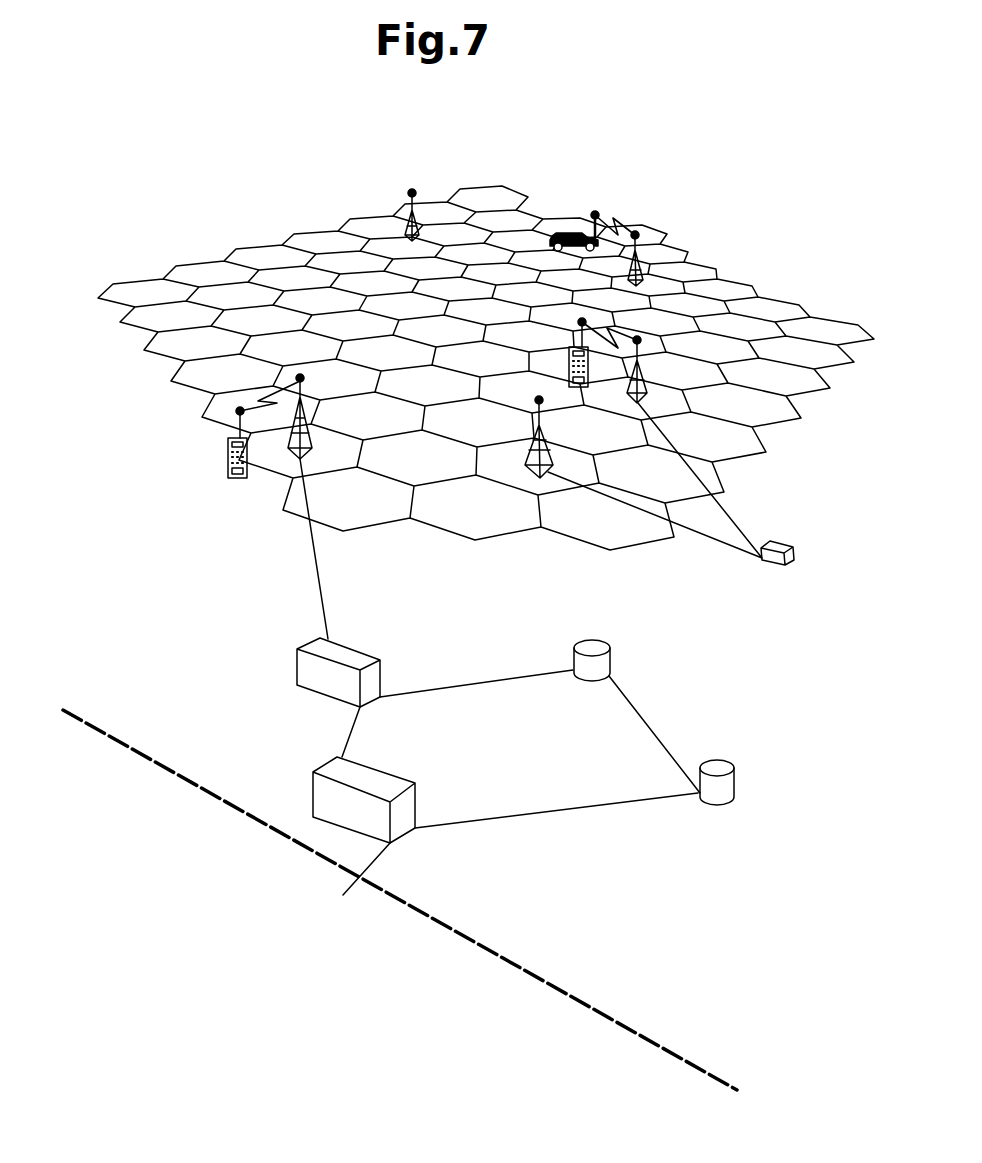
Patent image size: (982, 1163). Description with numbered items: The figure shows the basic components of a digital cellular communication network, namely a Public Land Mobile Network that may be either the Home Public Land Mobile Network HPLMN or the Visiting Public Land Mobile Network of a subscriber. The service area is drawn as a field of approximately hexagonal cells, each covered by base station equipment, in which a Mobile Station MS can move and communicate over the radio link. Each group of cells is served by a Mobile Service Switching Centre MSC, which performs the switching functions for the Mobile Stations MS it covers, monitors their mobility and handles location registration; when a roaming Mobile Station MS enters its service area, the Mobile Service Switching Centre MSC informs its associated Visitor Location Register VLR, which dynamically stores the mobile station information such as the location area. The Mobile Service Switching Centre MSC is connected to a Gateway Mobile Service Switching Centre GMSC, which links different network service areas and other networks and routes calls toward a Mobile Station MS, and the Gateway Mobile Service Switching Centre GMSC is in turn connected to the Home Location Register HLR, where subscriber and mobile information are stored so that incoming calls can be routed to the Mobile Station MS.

The Mobile Station MS is at (226, 448).
The Mobile Service Switching Centre MSC is at (790, 545).
The Visitor Location Register VLR is at (600, 640).
The Home Location Register HLR is at (725, 766).
The Gateway Mobile Service Switching Centre GMSC is at (405, 778).
The Home Public Land Mobile Network HPLMN is at (400, 831).